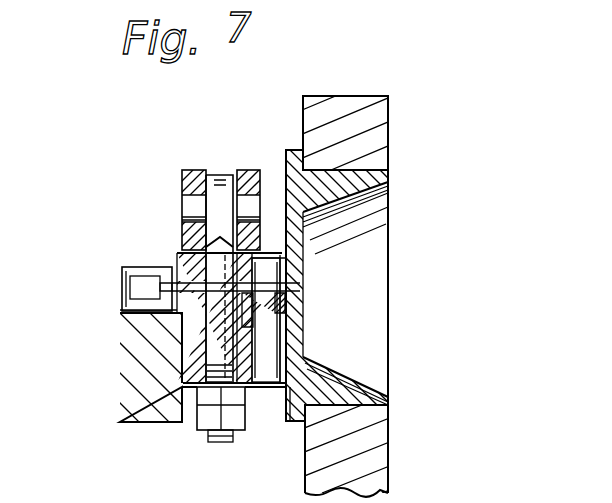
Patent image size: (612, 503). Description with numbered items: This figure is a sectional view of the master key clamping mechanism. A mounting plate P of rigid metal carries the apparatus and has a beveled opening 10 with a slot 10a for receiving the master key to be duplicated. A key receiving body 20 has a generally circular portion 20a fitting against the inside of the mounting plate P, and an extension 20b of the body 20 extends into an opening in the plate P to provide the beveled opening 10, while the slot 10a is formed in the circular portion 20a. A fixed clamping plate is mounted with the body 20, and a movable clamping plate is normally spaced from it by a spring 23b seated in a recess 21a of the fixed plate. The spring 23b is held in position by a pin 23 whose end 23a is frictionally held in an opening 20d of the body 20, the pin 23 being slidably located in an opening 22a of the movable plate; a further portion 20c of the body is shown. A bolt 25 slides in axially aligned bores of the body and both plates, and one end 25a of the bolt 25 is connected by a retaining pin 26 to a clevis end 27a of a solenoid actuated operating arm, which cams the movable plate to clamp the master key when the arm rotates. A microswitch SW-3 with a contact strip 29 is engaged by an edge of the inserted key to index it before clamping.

The mounting plate P is at (351, 104).
The key receiving body 20 is at (135, 400).
The circular portion 20a is at (292, 155).
The extension 20b is at (357, 170).
The housing inner wall 20c is at (323, 340).
The opening 20d is at (325, 361).
The opening 22a is at (262, 277).
The pin 23 is at (285, 308).
The end 23a is at (258, 393).
The spring 23b is at (285, 293).
The beveled opening 10 is at (363, 369).
The slot 10a is at (310, 287).
The bolt 25 is at (218, 445).
The end 25a is at (220, 176).
The retaining pin 26 is at (182, 203).
The clevis end 27a is at (182, 178).
The contact strip 29 is at (155, 290).
The switch SW-3 is at (127, 265).
The recess 21a is at (237, 300).